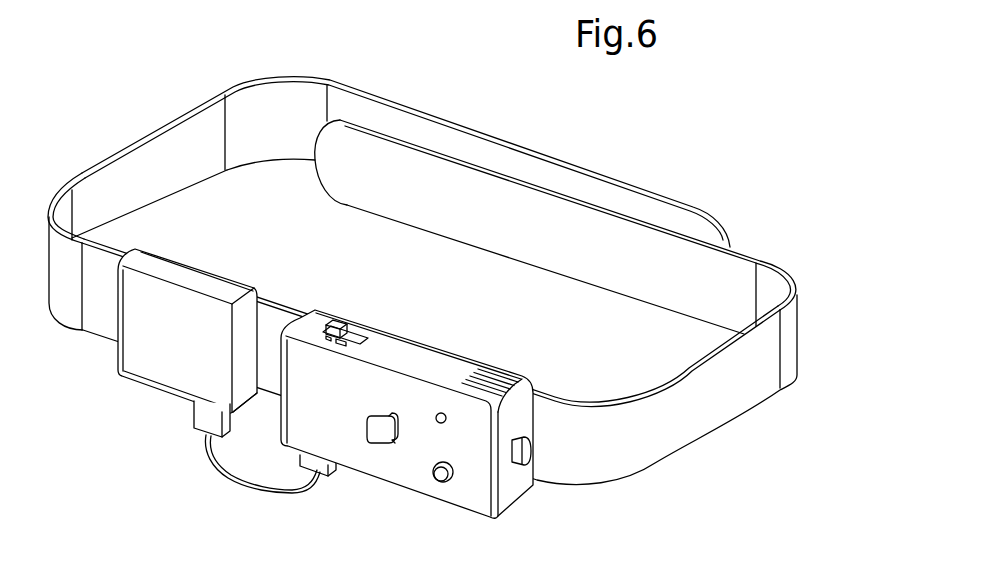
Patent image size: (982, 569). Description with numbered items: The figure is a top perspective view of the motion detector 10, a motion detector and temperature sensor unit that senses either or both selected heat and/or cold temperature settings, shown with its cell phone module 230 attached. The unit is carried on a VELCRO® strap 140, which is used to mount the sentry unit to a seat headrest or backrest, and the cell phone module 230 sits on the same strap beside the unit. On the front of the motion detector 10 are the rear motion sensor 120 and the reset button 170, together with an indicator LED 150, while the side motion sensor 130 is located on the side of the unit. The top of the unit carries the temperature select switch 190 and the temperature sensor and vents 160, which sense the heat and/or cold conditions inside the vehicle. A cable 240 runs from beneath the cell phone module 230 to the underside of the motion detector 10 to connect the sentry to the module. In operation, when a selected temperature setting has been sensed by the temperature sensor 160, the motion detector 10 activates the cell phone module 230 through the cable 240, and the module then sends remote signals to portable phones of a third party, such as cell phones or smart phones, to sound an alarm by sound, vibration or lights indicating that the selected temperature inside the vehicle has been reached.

The motion detector and temperature sensor unit 10 is at (468, 344).
The rear motion sensor 120 is at (383, 440).
The side motion sensor 130 is at (527, 457).
The VELCRO® strap 140 is at (595, 228).
The indicator LED 150 is at (441, 413).
The temperature sensor and vents 160 is at (489, 371).
The reset button 170 is at (442, 483).
The temperature select switch 190 is at (332, 317).
The cell phone module 230 is at (167, 370).
The cable 240 is at (225, 468).